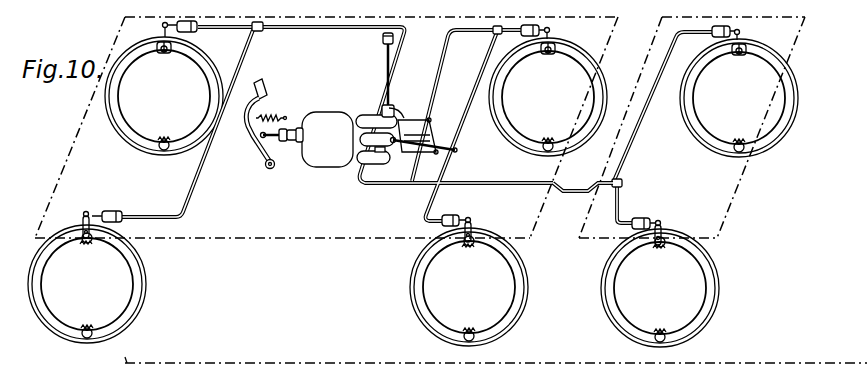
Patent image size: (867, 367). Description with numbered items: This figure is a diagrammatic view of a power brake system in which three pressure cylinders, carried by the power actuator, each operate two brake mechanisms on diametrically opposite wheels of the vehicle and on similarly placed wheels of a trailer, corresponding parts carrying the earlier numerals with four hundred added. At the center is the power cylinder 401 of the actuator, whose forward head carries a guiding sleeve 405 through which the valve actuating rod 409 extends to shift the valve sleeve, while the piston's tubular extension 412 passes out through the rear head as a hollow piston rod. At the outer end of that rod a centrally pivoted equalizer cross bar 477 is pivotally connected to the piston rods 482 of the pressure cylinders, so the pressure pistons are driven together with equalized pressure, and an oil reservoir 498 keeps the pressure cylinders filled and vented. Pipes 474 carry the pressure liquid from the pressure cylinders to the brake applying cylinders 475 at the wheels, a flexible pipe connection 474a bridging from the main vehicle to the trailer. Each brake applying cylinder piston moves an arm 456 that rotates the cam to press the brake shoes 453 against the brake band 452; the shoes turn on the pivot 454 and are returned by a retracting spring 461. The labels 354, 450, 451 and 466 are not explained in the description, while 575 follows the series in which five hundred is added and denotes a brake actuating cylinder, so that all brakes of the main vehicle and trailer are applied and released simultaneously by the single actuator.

The vehicle chassis frame 354 is at (420, 119).
The power cylinder 401 is at (340, 167).
The guiding sleeve 405 is at (289, 142).
The valve actuating rod 409 is at (266, 166).
The tubular piston rod extension 412 is at (428, 126).
The brake pedal 450 is at (254, 129).
The return spring 451 is at (264, 117).
The brake band 452 is at (152, 153).
The brake shoes 453 is at (119, 108).
The brake shoe pivot 454 is at (82, 341).
The arm 456 is at (84, 213).
The retracting spring 461 is at (86, 325).
The brake lever 466 is at (668, 229).
The pipes 474 is at (312, 30).
The flexible pipe connections 474a is at (572, 193).
The brake applying cylinders 475 is at (196, 13).
The equalizer cross bar 477 is at (451, 143).
The pressure cylinder piston rod 482 is at (396, 161).
The oil reservoir 498 is at (385, 46).
The brake actuating cylinder 575 is at (186, 365).